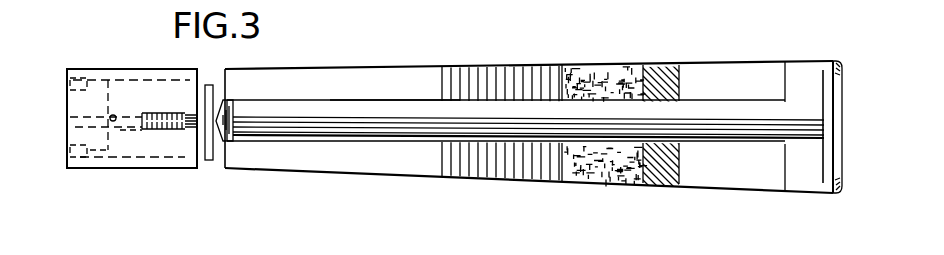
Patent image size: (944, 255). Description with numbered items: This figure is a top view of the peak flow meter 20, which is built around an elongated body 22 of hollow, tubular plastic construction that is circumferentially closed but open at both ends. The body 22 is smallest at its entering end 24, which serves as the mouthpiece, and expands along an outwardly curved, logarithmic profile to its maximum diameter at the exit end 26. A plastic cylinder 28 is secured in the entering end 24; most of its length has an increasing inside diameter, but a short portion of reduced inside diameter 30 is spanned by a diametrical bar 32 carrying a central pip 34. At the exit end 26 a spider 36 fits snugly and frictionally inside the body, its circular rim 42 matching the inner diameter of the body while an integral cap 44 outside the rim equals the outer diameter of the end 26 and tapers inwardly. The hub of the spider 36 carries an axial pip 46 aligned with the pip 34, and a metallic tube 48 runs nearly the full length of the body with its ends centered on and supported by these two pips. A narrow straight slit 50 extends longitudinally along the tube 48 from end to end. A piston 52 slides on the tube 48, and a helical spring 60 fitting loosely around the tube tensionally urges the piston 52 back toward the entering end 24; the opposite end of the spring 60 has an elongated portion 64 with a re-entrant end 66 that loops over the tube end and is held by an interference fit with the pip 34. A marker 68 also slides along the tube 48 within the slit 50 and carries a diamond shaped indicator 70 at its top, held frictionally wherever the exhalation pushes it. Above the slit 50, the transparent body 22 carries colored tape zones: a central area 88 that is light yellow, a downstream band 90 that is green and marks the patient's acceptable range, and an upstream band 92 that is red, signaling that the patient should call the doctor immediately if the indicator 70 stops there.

The peak flow meter 20 is at (736, 190).
The elongated body 22 is at (705, 65).
The entering end 24 is at (67, 68).
The exit end 26 is at (817, 60).
The plastic cylinder 28 is at (118, 79).
The portion of reduced inside diameter 30 is at (92, 150).
The diametrical bar 32 is at (66, 140).
The pip 34 is at (124, 112).
The spider 36 is at (845, 121).
The circular rim 42 is at (838, 65).
The cap 44 is at (842, 194).
The pip 46 is at (809, 123).
The metallic tube 48 is at (399, 102).
The slit 50 is at (357, 121).
The piston 52 is at (208, 85).
The helical spring 60 is at (157, 113).
The elongated portion 64 is at (127, 130).
The re-entrant end 66 is at (66, 117).
The marker 68 is at (243, 111).
The diamond shaped indicator 70 is at (244, 104).
The central area 88 is at (593, 72).
The downstream band 90 is at (670, 70).
The upstream band 92 is at (505, 78).